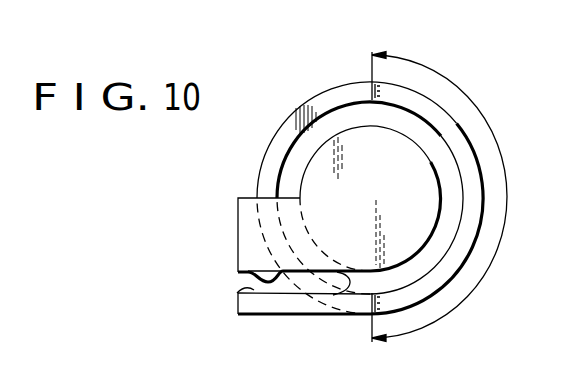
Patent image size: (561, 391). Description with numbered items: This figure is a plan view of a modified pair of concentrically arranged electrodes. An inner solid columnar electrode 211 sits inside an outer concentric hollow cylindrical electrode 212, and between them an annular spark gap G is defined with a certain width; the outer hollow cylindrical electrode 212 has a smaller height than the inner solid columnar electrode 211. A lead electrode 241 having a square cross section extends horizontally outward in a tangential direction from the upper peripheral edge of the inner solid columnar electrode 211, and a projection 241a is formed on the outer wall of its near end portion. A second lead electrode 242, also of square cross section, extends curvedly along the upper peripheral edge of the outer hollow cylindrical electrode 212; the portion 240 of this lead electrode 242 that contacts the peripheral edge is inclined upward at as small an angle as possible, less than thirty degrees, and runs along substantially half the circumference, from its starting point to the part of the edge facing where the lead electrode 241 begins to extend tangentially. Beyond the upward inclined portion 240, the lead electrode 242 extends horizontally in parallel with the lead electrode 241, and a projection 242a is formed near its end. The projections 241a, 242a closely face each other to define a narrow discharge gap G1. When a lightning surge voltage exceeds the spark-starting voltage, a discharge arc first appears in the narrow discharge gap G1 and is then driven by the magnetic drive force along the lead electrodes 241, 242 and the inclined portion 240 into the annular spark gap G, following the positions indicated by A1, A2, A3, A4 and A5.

The outer concentric hollow cylindrical electrode 212 is at (349, 89).
The inner solid columnar electrode 211 is at (442, 152).
The upward inclined portion 240 is at (499, 162).
The lead electrode 241 is at (241, 223).
The projection 241a is at (266, 281).
The lead electrode 242 is at (252, 309).
The projection 242a is at (250, 293).
The annular spark gap G is at (398, 126).
The narrow discharge gap G1 is at (256, 284).
The discharge arc position A1 is at (341, 279).
The discharge arc position A2 is at (460, 212).
The discharge arc position A3 is at (342, 128).
The discharge arc position A4 is at (300, 186).
The discharge arc position A5 is at (314, 253).